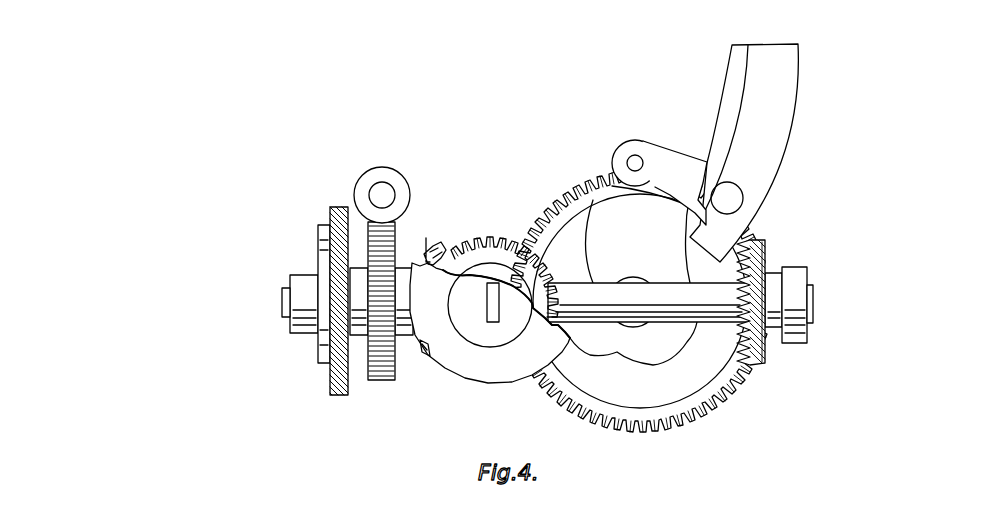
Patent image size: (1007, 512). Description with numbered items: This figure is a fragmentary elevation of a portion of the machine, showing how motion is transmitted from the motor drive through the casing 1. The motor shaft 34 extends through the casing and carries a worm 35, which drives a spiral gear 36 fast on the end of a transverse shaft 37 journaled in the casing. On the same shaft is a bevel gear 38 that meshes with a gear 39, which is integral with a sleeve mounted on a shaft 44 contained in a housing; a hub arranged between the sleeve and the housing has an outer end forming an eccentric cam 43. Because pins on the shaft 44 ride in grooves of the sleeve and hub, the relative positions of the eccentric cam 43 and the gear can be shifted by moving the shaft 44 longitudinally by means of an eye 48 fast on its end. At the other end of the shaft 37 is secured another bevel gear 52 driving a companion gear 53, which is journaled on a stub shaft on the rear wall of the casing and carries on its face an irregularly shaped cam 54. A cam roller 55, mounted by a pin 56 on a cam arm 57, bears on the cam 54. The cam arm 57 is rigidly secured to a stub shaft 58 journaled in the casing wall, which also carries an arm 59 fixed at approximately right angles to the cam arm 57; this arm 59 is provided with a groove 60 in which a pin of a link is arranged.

The casing 1 is at (334, 392).
The motor shaft 34 is at (383, 193).
The worm 35 is at (374, 182).
The spiral gear 36 is at (383, 381).
The transverse shaft 37 is at (282, 310).
The bevel gear 38 is at (438, 240).
The gear 39 is at (499, 236).
The eccentric cam 43 is at (496, 370).
The shaft 44 is at (467, 323).
The eye 48 is at (490, 318).
The bevel gear 52 is at (767, 247).
The companion gear 53 is at (710, 407).
The irregularly shaped cam 54 is at (590, 222).
The cam roller 55 is at (630, 142).
The pin 56 is at (630, 162).
The cam arm 57 is at (675, 160).
The stub shaft 58 is at (730, 198).
The arm 59 is at (742, 83).
The groove 60 is at (758, 55).